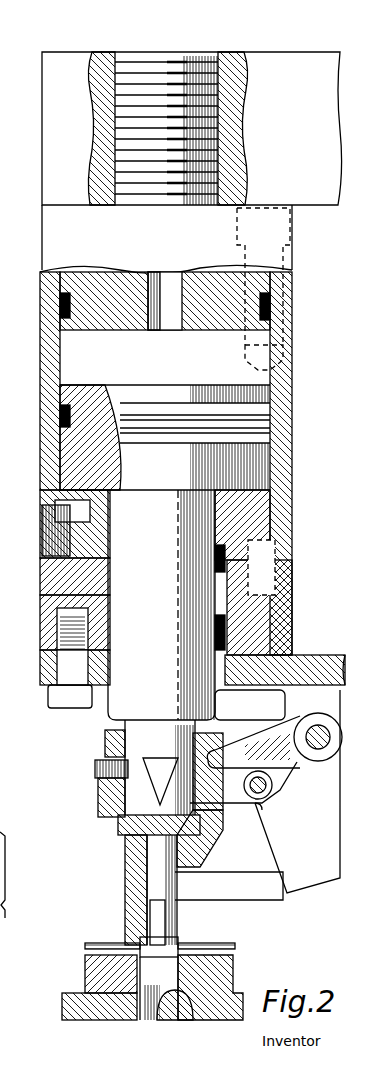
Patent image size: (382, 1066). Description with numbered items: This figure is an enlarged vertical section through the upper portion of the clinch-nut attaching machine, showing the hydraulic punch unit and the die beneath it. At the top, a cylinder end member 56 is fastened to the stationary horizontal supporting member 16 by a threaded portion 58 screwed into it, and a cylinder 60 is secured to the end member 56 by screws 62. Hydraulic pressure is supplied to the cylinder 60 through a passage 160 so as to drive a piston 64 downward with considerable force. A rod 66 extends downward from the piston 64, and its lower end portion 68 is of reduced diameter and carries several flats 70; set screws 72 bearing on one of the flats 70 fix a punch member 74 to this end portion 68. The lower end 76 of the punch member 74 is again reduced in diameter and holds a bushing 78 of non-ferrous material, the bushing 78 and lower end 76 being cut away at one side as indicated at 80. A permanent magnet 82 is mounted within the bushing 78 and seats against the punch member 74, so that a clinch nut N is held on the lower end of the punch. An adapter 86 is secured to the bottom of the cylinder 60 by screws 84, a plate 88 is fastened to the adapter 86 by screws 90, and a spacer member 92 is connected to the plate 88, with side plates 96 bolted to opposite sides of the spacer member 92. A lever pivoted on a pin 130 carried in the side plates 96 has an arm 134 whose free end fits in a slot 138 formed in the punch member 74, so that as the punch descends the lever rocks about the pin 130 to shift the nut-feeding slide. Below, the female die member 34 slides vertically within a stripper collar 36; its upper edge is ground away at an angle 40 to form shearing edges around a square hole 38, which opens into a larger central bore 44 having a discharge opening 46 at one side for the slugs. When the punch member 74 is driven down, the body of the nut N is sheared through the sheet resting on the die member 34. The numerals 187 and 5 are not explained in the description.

The supporting member 16 is at (70, 78).
The threaded portion 58 is at (142, 75).
The cylinder end member 56 is at (60, 232).
The passage 160 is at (162, 290).
The screws 62 is at (292, 233).
The cylinder 60 is at (278, 378).
The piston 64 is at (268, 458).
The spring retainer 187 is at (85, 502).
The piston rod 66 is at (118, 580).
The adapter 86 is at (55, 620).
The screws 90 is at (55, 692).
The flats 70 is at (146, 740).
The screws 84 is at (278, 570).
The spacer member 92 is at (302, 700).
The plate 88 is at (330, 665).
The lower end portion 68 is at (130, 740).
The set screws 72 is at (100, 776).
The punch member 74 is at (118, 816).
The bushing 78 is at (140, 876).
The lower end 76 is at (130, 897).
The cut away 80 is at (180, 874).
The permanent magnet 82 is at (155, 920).
The plate 5 is at (90, 943).
The clinch nut N is at (180, 942).
The angled upper edge 40 is at (185, 948).
The central bore 44 is at (225, 970).
The stripper collar 36 is at (90, 970).
The female die member 34 is at (125, 997).
The square hole 38 is at (148, 1012).
The discharge opening 46 is at (185, 1021).
The slot 138 is at (212, 753).
The pivot pin 130 is at (320, 746).
The lever arm 134 is at (283, 766).
The side plates 96 is at (318, 868).